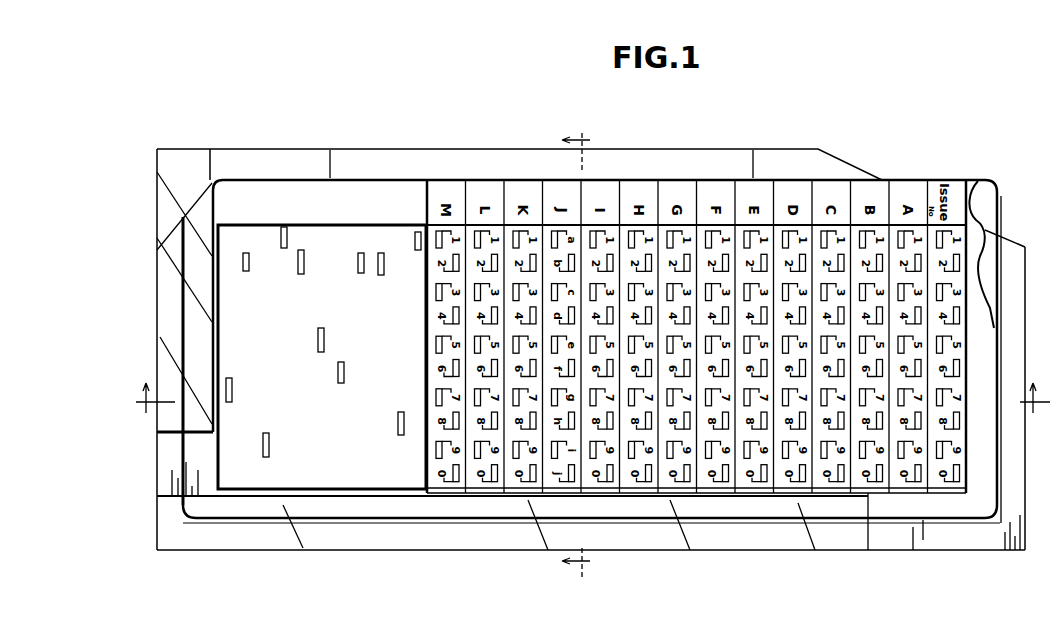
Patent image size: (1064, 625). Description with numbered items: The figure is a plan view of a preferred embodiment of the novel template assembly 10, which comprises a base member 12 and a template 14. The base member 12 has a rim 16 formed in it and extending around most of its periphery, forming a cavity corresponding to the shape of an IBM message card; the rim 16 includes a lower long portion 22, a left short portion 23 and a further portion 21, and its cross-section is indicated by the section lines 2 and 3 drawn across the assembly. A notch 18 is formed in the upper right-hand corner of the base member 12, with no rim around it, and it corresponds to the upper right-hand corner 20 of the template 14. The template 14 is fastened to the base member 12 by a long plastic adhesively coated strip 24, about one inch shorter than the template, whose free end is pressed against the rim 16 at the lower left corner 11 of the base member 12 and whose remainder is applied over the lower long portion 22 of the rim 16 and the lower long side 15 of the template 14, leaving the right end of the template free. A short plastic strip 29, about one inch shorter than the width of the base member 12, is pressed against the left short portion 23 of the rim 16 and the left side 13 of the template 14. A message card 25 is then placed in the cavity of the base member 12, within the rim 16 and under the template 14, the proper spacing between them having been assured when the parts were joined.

The template assembly 10 is at (157, 228).
The lower left corner 11 is at (157, 533).
The base member 12 is at (952, 552).
The left side 13 is at (195, 440).
The template 14 is at (908, 179).
The lower long side 15 is at (905, 520).
The rim 16 is at (657, 162).
The notch 18 is at (990, 231).
The upper right-hand corner 20 is at (985, 183).
The rim portion 21 is at (1025, 470).
The lower long portion 22 is at (326, 548).
The left short portion 23 is at (157, 339).
The plastic adhesively coated strip 24 is at (206, 548).
The message card 25 is at (1000, 198).
The short plastic strip 29 is at (157, 297).
The section line 2- 2 is at (568, 355).
The section line 3- 3 is at (592, 387).